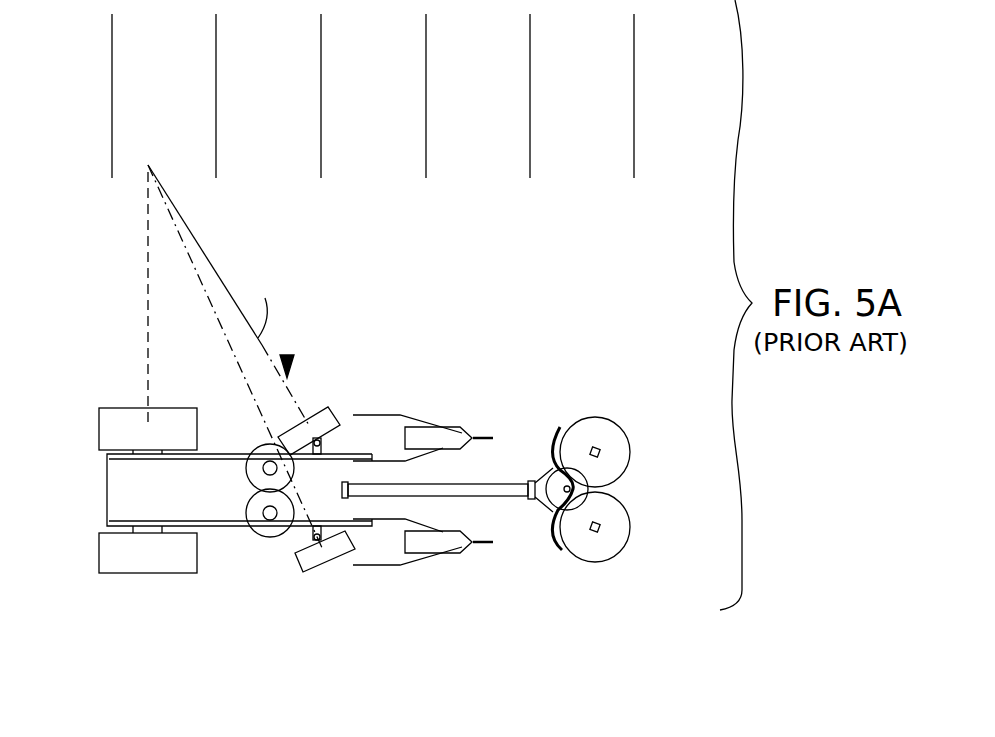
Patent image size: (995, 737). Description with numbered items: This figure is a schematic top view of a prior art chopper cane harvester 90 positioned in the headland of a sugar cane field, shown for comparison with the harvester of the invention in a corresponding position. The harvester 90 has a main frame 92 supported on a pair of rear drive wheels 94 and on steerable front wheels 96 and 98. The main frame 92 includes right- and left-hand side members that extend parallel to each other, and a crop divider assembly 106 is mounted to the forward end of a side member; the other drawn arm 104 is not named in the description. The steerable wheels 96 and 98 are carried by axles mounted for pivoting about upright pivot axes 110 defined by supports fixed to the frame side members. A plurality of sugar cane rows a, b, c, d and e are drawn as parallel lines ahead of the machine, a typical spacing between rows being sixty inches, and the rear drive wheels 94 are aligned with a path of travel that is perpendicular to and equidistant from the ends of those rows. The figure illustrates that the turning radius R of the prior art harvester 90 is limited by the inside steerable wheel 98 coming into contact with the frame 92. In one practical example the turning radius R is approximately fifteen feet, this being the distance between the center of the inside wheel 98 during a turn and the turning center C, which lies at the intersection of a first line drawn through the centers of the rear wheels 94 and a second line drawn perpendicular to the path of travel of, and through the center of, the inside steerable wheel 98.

The prior art cane harvester 90 is at (374, 375).
The main frame 92 is at (227, 456).
The rear drive wheels 94 is at (114, 408).
The steerable front wheel 96 is at (294, 558).
The steerable front wheel 98 is at (333, 417).
The lower arm 104 is at (465, 543).
The crop divider assembly 106 is at (466, 440).
The upright pivot axes 110 is at (492, 483).
The turning radius R is at (273, 321).
The turning center C is at (148, 165).
The sugar cane row a is at (216, 96).
The sugar cane row b is at (321, 96).
The sugar cane row c is at (426, 96).
The sugar cane row d is at (530, 96).
The sugar cane row e is at (634, 96).